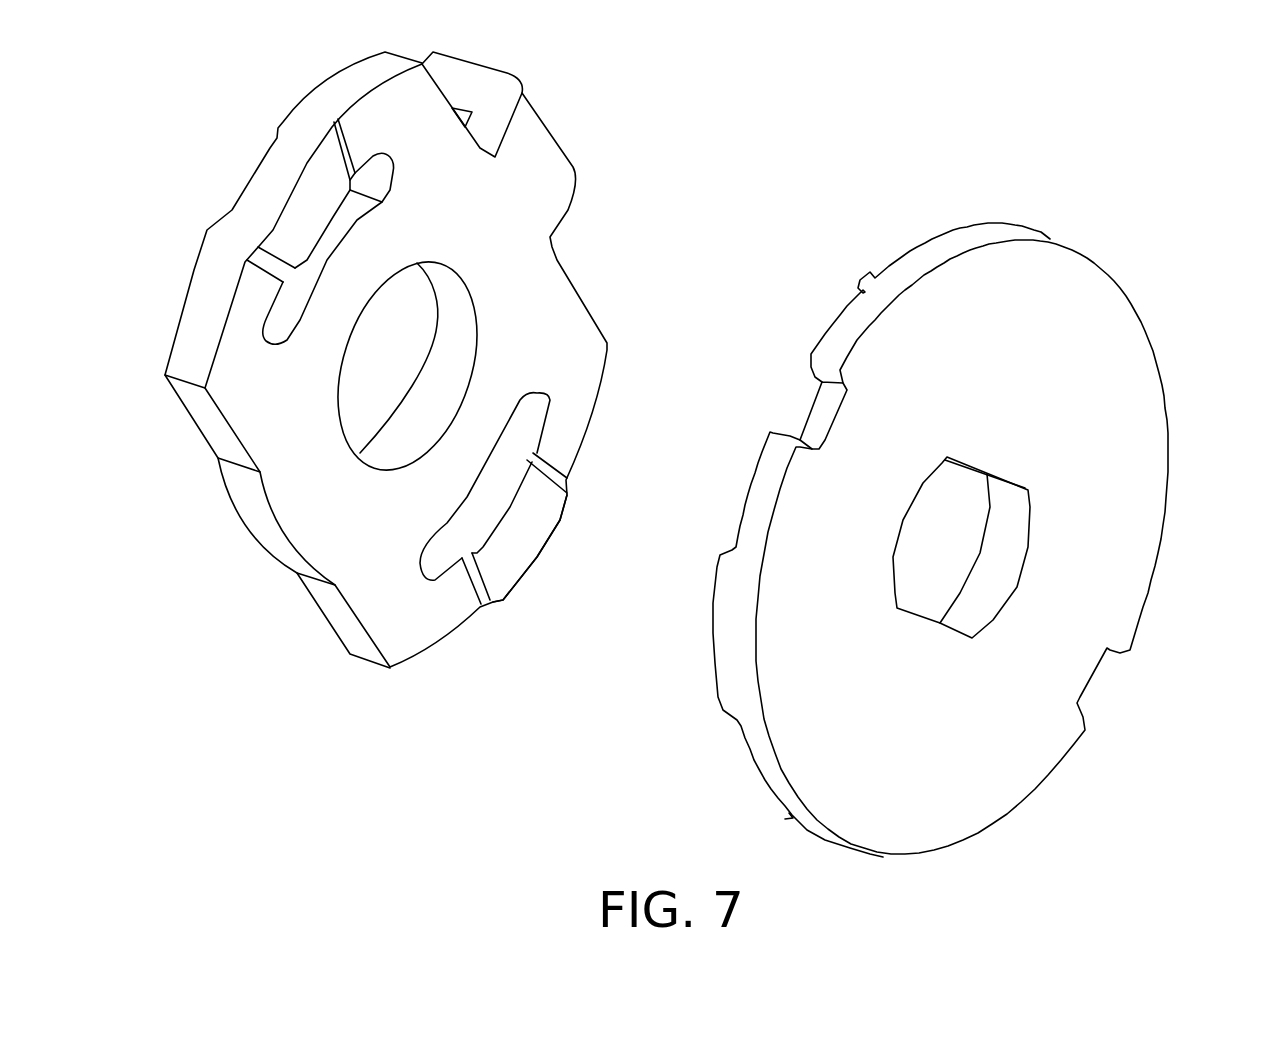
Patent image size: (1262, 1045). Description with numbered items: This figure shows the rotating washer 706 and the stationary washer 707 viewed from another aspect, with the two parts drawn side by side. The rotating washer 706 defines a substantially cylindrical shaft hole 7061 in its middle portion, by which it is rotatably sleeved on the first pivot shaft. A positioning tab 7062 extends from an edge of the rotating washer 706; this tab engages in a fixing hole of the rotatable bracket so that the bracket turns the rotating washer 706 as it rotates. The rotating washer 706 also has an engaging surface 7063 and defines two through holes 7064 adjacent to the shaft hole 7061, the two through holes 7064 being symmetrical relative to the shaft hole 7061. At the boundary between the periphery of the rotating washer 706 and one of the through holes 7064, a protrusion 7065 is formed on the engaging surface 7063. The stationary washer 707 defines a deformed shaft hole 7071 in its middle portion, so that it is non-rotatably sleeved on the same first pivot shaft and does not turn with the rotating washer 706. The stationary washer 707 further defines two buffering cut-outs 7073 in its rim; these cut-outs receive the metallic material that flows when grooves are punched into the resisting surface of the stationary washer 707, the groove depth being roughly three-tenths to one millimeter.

The rotating washer 706 is at (437, 357).
The shaft hole 7061 is at (413, 307).
The positioning tab 7062 is at (483, 88).
The engaging surface 7063 is at (527, 313).
The through holes 7064 is at (523, 425).
The protrusion 7065 is at (533, 520).
The stationary washer 707 is at (982, 512).
The deformed shaft hole 7071 is at (978, 522).
The buffering cut-outs 7073 is at (820, 415).